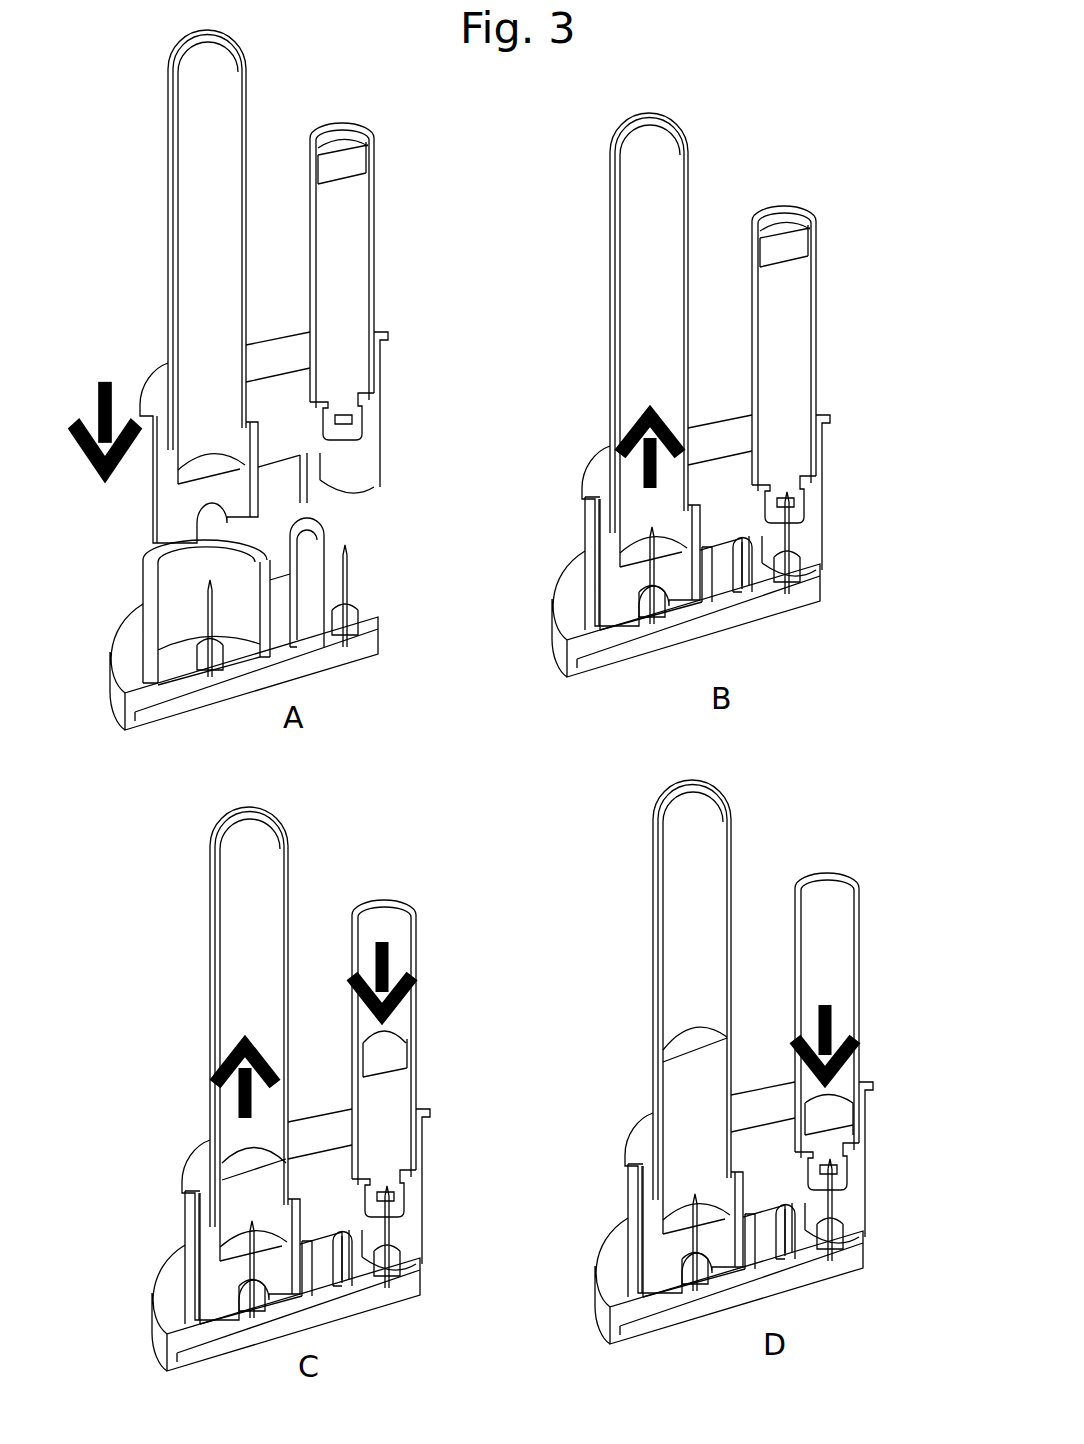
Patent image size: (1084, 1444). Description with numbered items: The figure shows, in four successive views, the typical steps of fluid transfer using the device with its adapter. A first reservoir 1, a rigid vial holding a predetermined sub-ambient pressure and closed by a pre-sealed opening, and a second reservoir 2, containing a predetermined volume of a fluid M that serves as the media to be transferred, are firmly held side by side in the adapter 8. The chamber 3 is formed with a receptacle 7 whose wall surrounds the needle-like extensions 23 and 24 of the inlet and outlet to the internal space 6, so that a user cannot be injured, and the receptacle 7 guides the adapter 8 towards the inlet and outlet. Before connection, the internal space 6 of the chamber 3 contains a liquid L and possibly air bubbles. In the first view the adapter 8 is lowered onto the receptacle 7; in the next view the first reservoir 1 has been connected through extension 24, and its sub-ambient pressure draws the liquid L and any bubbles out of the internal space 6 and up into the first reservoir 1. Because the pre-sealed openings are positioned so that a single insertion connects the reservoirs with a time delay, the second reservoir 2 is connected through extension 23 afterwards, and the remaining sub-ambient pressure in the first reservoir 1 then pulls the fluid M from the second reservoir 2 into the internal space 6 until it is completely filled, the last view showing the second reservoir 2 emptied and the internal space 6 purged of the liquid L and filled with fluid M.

The first reservoir 1 is at (188, 258).
The second reservoir 2 is at (372, 238).
The chamber 3 is at (130, 700).
The internal space 6 is at (283, 678).
The receptacle 7 is at (143, 585).
The adapter 8 is at (383, 418).
The needle-like extension of the inlet 23 is at (350, 563).
The needle-like extension of the outlet 24 is at (215, 612).
The liquid L is at (225, 692).
The fluid M is at (350, 318).